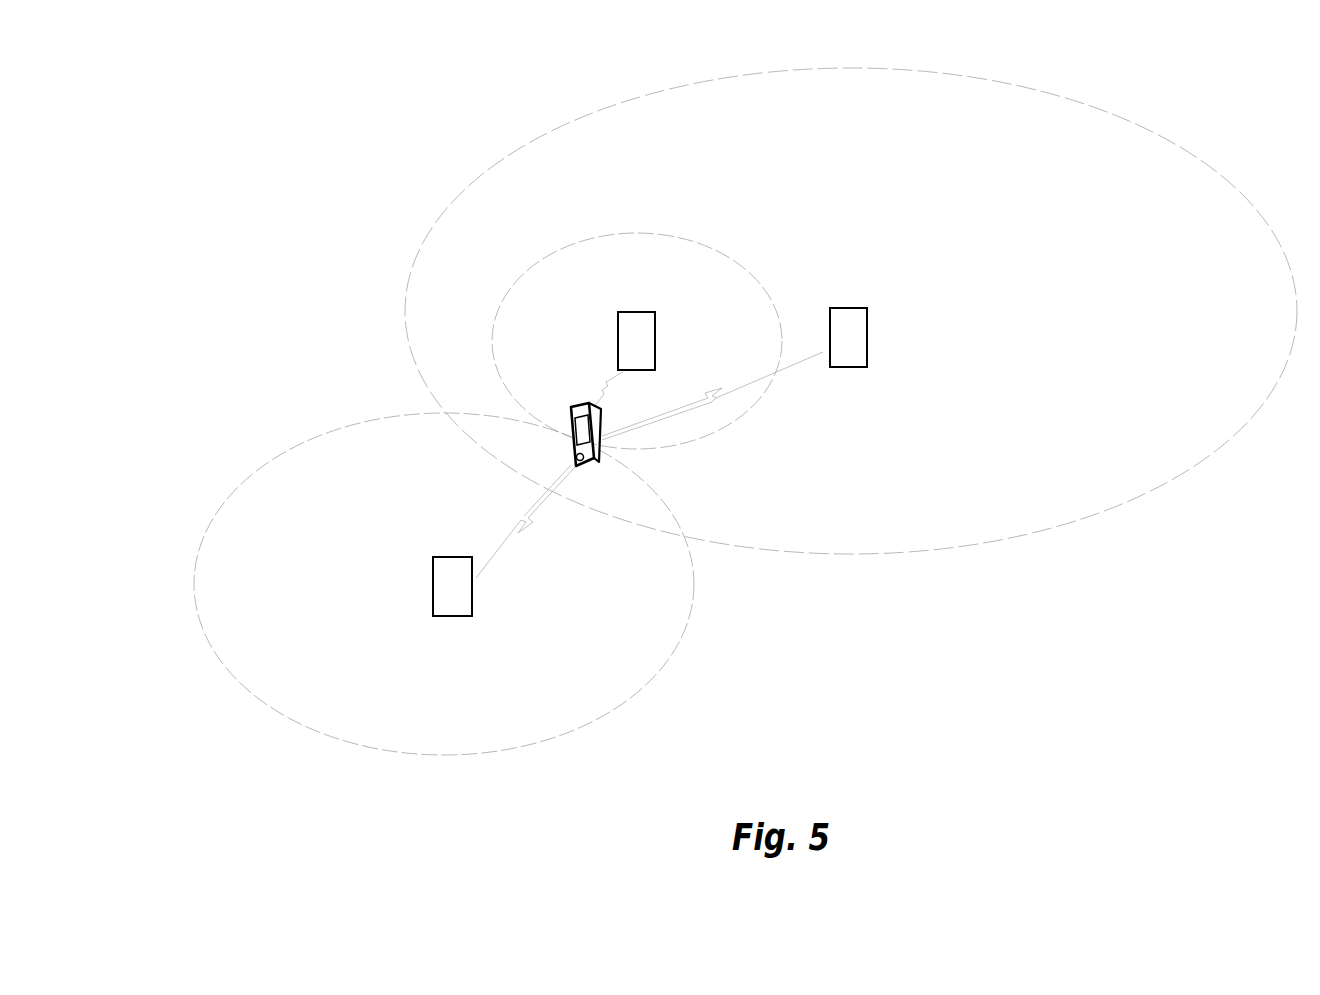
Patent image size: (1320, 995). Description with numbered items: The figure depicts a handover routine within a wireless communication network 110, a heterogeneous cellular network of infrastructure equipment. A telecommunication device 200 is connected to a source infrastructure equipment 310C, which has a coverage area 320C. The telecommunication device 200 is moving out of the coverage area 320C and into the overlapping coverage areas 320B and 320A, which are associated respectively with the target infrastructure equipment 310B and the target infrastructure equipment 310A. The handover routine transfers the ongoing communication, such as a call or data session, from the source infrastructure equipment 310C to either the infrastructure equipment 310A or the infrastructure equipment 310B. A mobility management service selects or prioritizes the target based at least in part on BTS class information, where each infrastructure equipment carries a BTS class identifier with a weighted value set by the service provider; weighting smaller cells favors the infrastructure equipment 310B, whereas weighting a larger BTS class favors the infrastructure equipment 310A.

The wireless communication network 110 is at (502, 66).
The telecommunication device 200 is at (573, 410).
The infrastructure equipment 310A is at (867, 340).
The infrastructure equipment 310B is at (618, 331).
The infrastructure equipment 310C is at (433, 583).
The coverage area 320A is at (1041, 533).
The coverage area 320B is at (693, 440).
The coverage area 320C is at (305, 443).